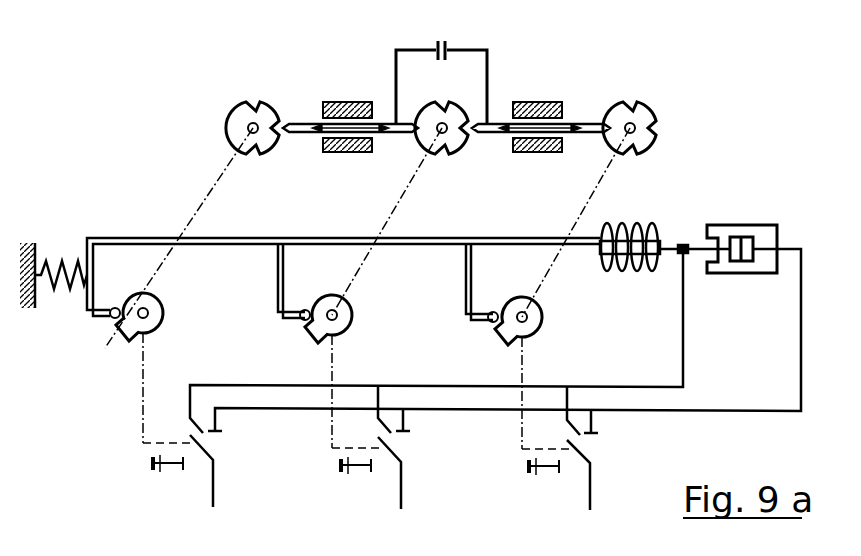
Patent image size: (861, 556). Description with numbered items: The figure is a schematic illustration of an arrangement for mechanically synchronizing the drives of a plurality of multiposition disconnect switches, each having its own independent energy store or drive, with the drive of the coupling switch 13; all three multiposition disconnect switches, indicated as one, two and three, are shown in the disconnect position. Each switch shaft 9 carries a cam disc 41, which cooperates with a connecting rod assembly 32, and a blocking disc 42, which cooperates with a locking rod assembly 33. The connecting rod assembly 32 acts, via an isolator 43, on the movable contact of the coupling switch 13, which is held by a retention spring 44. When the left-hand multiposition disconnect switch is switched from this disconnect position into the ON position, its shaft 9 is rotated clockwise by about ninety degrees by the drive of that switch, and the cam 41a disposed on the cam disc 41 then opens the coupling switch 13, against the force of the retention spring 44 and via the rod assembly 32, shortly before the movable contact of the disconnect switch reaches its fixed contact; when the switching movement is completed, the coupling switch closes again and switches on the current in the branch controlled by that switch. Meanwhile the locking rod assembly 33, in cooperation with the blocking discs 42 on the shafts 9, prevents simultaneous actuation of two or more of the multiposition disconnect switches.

The switch shaft 9 is at (370, 288).
The coupling switch 13 is at (477, 345).
The connecting rod assembly 32 is at (256, 301).
The locking rod assembly 33 is at (447, 62).
The cam disc 41 is at (118, 260).
The cam 41a is at (80, 352).
The blocking disc 42 is at (425, 90).
The isolator 43 is at (655, 204).
The retention spring 44 is at (70, 262).